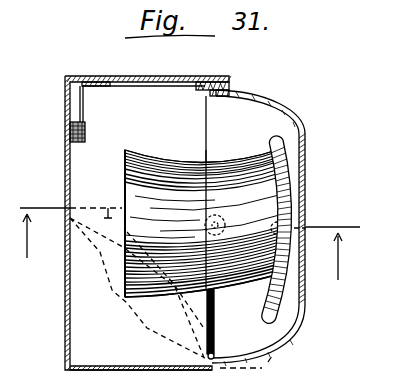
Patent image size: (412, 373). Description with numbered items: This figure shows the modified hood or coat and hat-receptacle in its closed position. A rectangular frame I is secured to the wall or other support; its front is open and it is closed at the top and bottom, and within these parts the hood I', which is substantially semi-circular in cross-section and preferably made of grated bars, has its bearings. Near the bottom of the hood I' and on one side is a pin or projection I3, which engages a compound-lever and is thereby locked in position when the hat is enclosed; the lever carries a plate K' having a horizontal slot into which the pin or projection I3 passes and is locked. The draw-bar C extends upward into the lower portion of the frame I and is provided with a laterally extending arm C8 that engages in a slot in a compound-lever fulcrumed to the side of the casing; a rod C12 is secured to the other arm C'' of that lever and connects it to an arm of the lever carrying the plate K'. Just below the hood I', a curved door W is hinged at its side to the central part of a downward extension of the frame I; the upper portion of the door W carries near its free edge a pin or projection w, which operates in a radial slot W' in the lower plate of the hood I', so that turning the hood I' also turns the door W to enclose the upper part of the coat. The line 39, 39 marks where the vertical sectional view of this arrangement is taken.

The rectangular frame I is at (170, 215).
The hood I' is at (290, 229).
The pin or projection I3 is at (229, 86).
The bracket K' is at (214, 72).
The draw-bar C is at (62, 132).
The laterally extending arm C8 is at (83, 113).
The band C'' is at (108, 107).
The rod C12 is at (155, 87).
The section line 39 is at (191, 240).
The curved door W is at (176, 254).
The bar W' is at (225, 225).
The pin or projection w is at (214, 354).